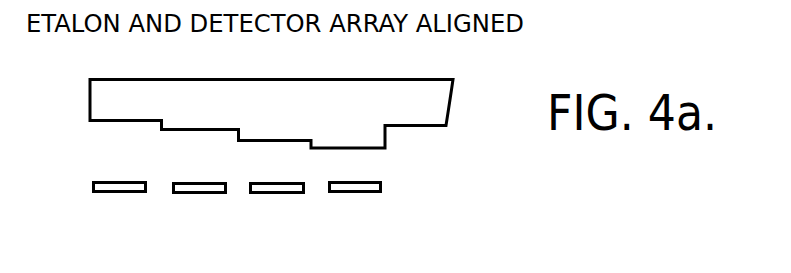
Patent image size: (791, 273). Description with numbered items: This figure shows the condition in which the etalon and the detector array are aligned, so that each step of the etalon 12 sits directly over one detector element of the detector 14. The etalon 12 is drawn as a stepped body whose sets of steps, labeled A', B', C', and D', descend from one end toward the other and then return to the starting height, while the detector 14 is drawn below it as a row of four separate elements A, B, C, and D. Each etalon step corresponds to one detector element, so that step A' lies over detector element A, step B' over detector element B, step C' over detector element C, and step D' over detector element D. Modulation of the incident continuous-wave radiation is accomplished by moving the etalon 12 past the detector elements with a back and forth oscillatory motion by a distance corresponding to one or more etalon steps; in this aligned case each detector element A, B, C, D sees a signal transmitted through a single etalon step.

The etalon 12 is at (308, 80).
The detector 14 is at (209, 224).
The detector element A is at (120, 201).
The detector element B is at (200, 203).
The detector element C is at (277, 203).
The detector element D is at (355, 201).